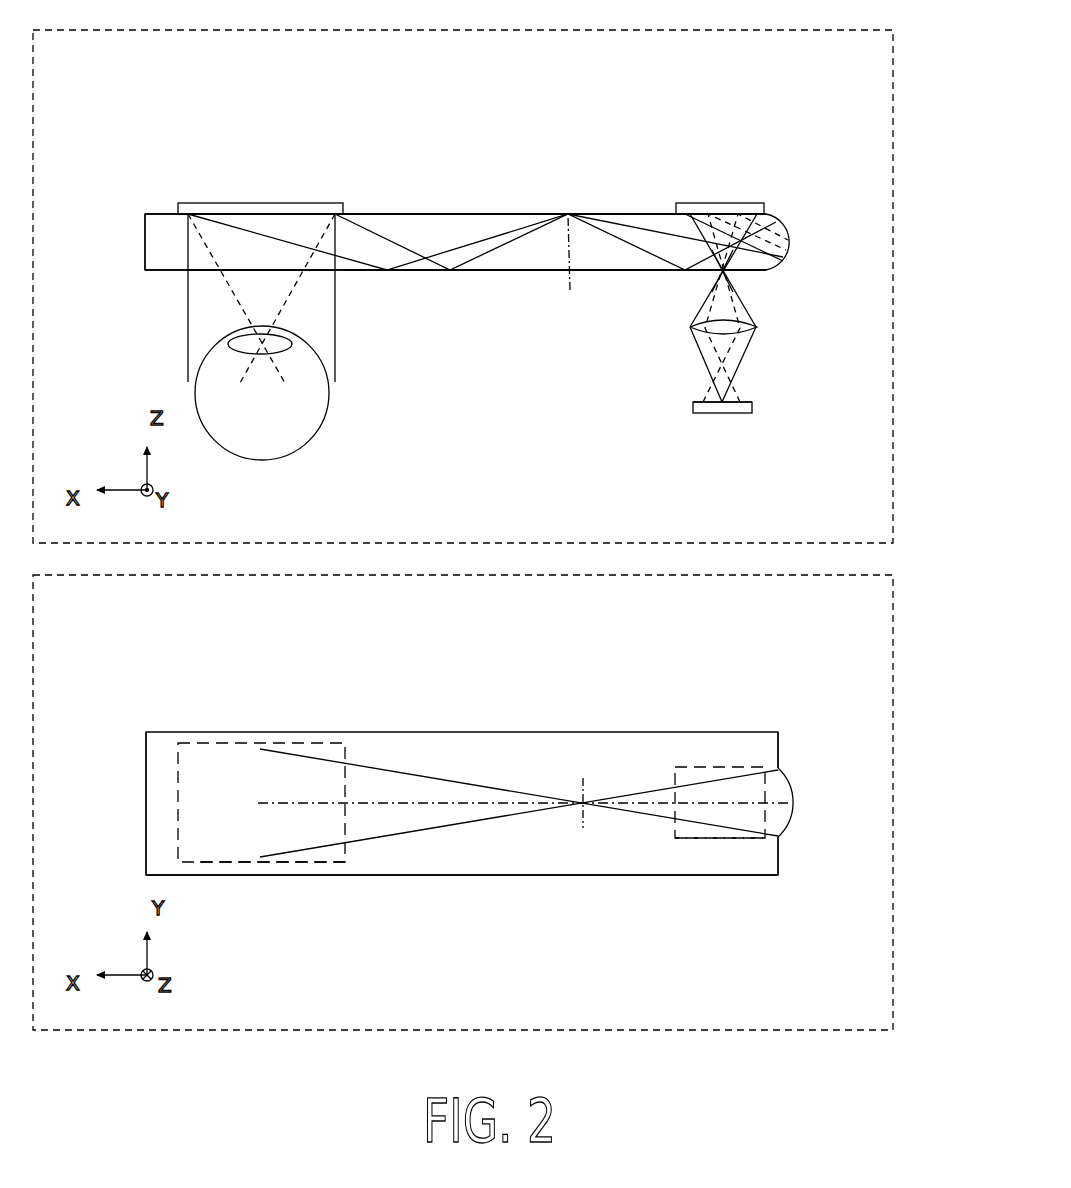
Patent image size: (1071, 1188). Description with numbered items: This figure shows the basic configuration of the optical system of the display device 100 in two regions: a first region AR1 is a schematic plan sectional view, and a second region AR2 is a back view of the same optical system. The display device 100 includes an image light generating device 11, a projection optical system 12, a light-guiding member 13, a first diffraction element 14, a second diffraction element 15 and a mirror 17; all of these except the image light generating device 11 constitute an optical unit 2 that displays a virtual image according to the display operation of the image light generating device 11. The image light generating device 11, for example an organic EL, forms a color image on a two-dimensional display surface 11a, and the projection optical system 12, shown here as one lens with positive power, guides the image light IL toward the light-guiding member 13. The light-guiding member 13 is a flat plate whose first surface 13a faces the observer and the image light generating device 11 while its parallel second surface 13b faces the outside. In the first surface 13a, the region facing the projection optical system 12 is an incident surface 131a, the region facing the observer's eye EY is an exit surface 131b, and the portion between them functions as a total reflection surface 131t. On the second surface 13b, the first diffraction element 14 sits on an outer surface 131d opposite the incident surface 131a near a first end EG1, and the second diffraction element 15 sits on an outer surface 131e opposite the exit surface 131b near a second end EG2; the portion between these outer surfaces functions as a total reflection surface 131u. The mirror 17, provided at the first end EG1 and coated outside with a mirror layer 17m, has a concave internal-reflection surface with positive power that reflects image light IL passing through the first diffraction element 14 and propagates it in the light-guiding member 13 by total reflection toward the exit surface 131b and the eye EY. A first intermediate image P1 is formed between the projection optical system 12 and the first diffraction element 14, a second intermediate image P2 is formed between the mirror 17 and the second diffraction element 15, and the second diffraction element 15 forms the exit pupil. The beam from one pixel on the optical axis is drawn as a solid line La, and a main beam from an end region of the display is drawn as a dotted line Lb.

The display device 100 is at (656, 144).
The optical unit 2 is at (530, 368).
The light-guiding member 13 is at (458, 212).
The first surface 13a is at (483, 273).
The second surface 13b is at (572, 212).
The incident surface 131a is at (712, 274).
The exit surface 131b is at (318, 273).
The outer surface 131d is at (650, 212).
The outer surface 131e is at (330, 212).
The total reflection surface 131t is at (538, 273).
The total reflection surface 131u is at (523, 212).
The first diffraction element 14 is at (716, 203).
The second diffraction element 15 is at (258, 203).
The mirror 17 is at (819, 505).
The mirror layer 17m is at (790, 250).
The first end EG1 is at (770, 213).
The second end EG2 is at (163, 228).
The image light generating device 11 is at (754, 405).
The display surface 11a is at (703, 400).
The projection optical system 12 is at (762, 330).
The image light IL is at (188, 288).
The solid line La is at (705, 337).
The dotted line Lb is at (275, 318).
The first intermediate image P1 is at (705, 276).
The second intermediate image P2 is at (583, 885).
The observer's eye EY is at (308, 403).
The first region AR1 is at (903, 122).
The second region AR2 is at (903, 660).